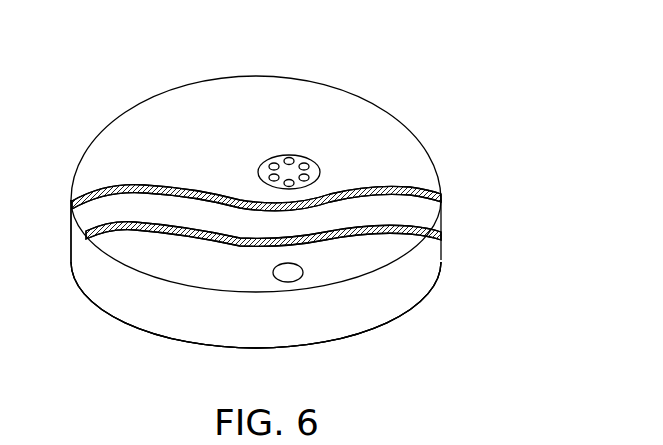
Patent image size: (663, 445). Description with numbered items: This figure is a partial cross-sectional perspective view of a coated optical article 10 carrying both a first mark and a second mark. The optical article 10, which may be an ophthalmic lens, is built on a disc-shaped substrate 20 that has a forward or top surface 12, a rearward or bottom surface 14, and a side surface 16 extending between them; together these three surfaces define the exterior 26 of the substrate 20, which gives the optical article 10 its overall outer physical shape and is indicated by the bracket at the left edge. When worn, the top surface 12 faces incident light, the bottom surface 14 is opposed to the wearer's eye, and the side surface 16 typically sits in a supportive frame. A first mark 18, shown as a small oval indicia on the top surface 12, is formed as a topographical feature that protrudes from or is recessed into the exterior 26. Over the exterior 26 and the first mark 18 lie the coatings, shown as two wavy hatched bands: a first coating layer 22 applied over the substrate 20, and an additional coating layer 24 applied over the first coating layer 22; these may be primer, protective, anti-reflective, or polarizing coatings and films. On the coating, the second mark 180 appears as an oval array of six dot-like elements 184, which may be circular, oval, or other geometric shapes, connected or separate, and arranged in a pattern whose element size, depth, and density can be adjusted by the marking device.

The optical article 10 is at (286, 210).
The top surface 12 is at (382, 249).
The bottom surface 14 is at (98, 302).
The side surface 16 is at (313, 333).
The first mark 18 is at (274, 272).
The substrate 20 is at (378, 307).
The first coating layer 22 is at (442, 237).
The additional coating layer 24 is at (442, 203).
The exterior 26 is at (60, 208).
The second mark 180 is at (301, 149).
The element 184 is at (286, 158).